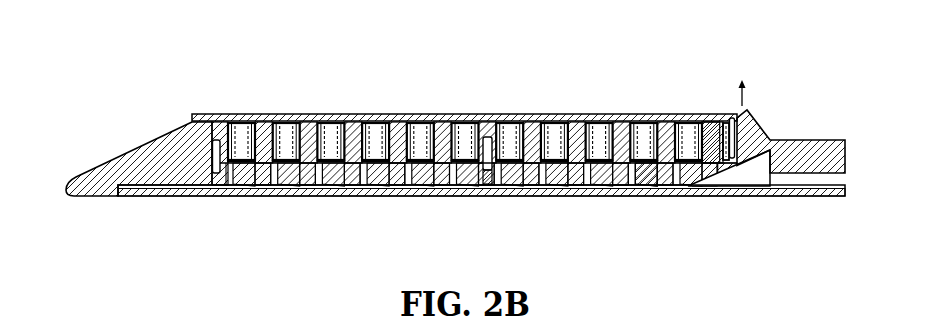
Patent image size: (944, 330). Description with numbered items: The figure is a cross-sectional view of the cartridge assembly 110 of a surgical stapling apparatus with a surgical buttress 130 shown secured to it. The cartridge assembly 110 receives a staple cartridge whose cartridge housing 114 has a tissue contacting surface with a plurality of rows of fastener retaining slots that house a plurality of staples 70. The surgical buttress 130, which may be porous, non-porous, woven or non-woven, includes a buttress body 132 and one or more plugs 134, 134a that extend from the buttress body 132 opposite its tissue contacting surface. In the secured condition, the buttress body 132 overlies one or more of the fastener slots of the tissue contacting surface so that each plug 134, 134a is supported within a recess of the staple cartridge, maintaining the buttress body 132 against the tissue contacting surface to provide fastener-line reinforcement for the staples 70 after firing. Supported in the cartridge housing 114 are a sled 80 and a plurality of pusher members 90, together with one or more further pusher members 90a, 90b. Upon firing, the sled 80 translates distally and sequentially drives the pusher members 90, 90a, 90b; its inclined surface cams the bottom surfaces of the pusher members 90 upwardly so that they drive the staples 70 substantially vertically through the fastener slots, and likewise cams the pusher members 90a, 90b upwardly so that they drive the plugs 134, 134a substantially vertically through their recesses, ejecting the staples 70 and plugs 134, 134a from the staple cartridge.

The cartridge assembly 110 is at (152, 126).
The buttress body 132 is at (378, 114).
The plug 134 is at (216, 138).
The plug 134a is at (488, 136).
The surgical buttress 130 is at (630, 104).
The pusher member 90a is at (764, 141).
The staples 70 is at (231, 147).
The cartridge housing 114 is at (422, 206).
The pusher member 90b is at (489, 184).
The pusher members 90 is at (652, 176).
The sled 80 is at (746, 182).